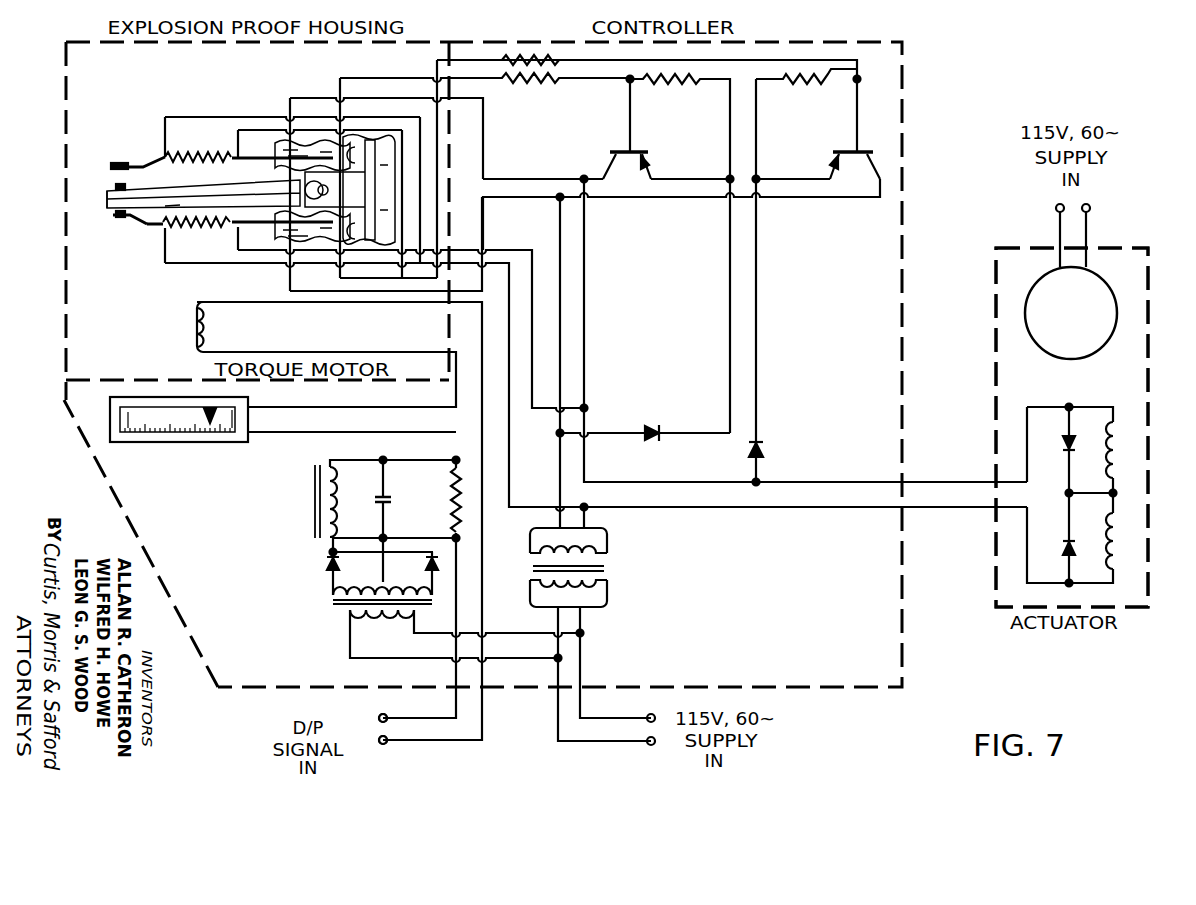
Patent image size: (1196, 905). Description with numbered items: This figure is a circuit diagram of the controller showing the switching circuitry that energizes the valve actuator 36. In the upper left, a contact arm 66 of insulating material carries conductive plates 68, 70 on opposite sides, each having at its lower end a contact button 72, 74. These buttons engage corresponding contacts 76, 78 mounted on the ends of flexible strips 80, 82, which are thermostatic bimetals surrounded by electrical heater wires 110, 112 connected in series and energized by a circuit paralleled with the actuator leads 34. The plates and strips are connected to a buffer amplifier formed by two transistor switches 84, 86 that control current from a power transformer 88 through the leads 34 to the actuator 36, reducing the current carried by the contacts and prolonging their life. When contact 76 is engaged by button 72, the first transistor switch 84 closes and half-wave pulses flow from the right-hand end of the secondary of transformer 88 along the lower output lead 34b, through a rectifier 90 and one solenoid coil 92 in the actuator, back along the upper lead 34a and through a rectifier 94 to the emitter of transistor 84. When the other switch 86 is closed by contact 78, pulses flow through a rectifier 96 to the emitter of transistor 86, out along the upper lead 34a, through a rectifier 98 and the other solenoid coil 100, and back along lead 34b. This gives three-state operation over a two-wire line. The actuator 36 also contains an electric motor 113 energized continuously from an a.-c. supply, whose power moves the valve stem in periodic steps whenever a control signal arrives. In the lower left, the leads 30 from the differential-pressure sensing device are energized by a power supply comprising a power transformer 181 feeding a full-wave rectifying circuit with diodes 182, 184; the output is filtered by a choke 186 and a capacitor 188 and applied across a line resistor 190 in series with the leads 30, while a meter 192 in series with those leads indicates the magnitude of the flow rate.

The electrical output leads 30 is at (444, 720).
The leads 34 is at (934, 484).
The upper output lead 34a is at (845, 482).
The lower output lead 34b is at (825, 510).
The valve actuator 36 is at (984, 329).
The contact arm 66 is at (107, 204).
The conductive plate 68 is at (172, 208).
The conductive plate 70 is at (216, 189).
The contact button 72 is at (116, 214).
The contact button 74 is at (116, 187).
The contact 76 is at (118, 217).
The contact 78 is at (114, 166).
The flexible strip 80 is at (147, 226).
The flexible strip 82 is at (149, 157).
The transistor switch 84 is at (838, 146).
The transistor switch 86 is at (610, 146).
The power transformer 88 is at (618, 570).
The rectifier 90 is at (1052, 554).
The solenoid coil 92 is at (1122, 448).
The rectifier 94 is at (762, 452).
The rectifier 96 is at (653, 426).
The rectifier 98 is at (1084, 429).
The solenoid coil 100 is at (1122, 532).
The electrical heater wire 110 is at (208, 229).
The electrical heater wire 112 is at (205, 151).
The electric motor 113 is at (1071, 313).
The power transformer 181 is at (330, 601).
The diode 182 is at (326, 563).
The diode 184 is at (429, 566).
The choke 186 is at (312, 494).
The capacitor 188 is at (394, 500).
The line resistor 190 is at (452, 510).
The meter 192 is at (207, 445).